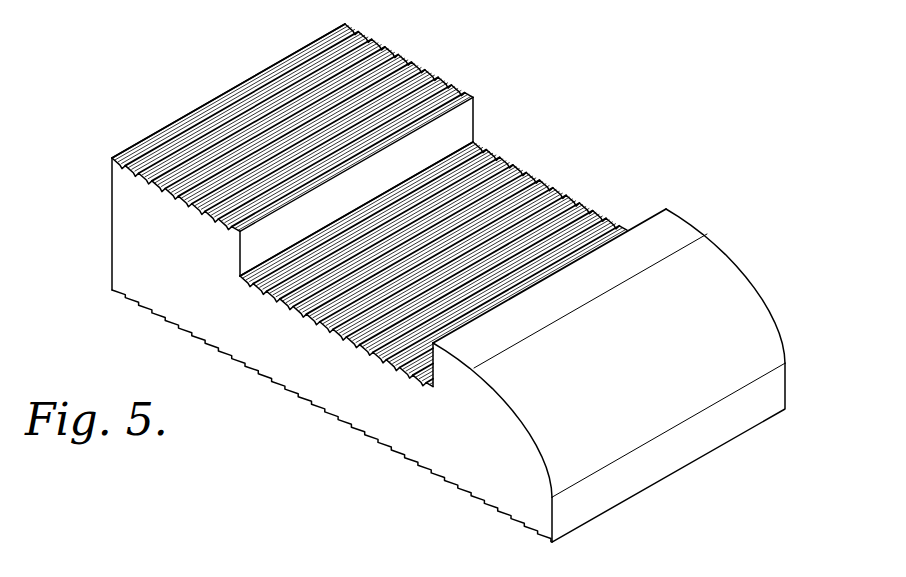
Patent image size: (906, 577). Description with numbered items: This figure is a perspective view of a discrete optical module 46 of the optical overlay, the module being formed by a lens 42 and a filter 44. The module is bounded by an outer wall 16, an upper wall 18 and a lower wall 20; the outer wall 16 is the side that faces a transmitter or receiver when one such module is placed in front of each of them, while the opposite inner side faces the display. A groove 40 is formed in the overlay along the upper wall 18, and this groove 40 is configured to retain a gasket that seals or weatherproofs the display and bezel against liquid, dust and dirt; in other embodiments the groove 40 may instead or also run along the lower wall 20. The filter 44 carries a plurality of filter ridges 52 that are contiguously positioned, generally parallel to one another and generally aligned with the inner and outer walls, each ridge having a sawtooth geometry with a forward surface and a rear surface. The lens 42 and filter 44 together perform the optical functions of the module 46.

The outer wall 16 is at (760, 309).
The upper wall 18 is at (677, 225).
The lower wall 20 is at (448, 484).
The groove 40 is at (516, 143).
The lens 42 is at (293, 415).
The filter 44 is at (633, 132).
The optical module 46 is at (178, 97).
The filter ridges 52 is at (420, 60).